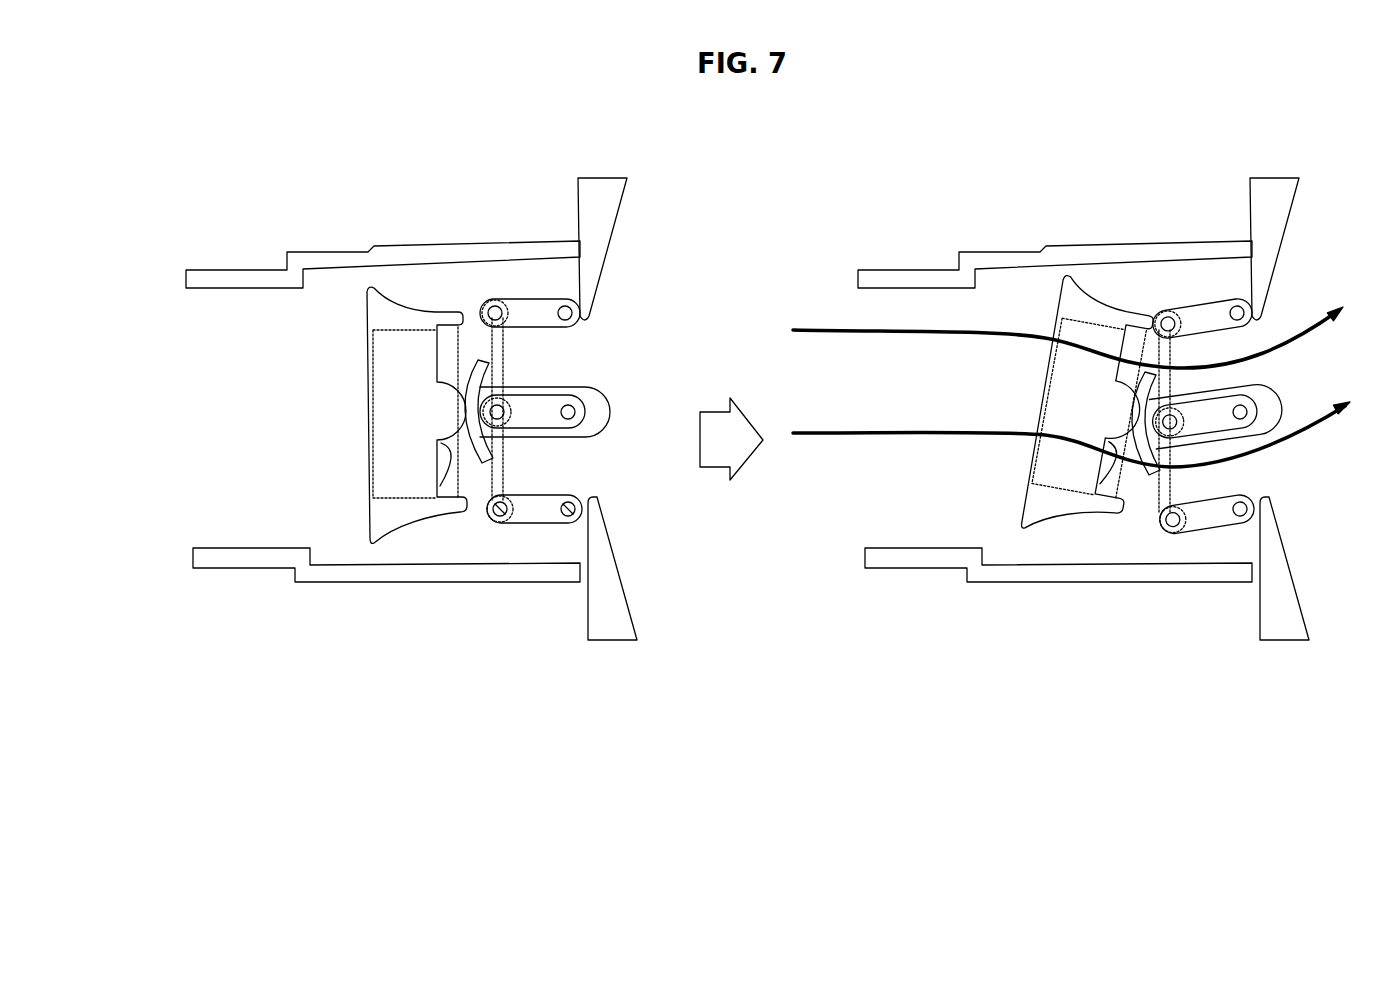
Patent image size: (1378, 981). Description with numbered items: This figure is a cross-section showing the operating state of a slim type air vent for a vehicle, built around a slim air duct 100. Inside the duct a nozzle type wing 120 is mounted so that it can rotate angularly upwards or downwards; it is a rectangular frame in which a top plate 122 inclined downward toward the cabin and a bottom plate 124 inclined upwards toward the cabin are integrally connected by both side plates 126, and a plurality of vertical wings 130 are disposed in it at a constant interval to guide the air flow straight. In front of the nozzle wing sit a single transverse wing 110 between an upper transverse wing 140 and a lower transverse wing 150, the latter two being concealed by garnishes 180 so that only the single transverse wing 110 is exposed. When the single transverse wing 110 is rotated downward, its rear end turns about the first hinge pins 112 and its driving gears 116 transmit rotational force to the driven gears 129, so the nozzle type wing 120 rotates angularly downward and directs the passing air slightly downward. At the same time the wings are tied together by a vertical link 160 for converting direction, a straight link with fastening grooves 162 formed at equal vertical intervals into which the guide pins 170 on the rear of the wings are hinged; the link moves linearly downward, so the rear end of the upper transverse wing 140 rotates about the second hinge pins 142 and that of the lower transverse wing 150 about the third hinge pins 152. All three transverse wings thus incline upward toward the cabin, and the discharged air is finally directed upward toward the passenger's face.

The slim air duct 100 is at (354, 245).
The single transverse wing 110 is at (591, 437).
The first hinge pins 112 is at (568, 415).
The driving gears 116 is at (467, 513).
The nozzle type wing 120 is at (363, 333).
The top plate 122 is at (407, 303).
The bottom plate 124 is at (394, 533).
The side plates 126 is at (368, 385).
The driven gears 129 is at (438, 468).
The vertical wings 130 is at (372, 425).
The upper transverse wing 140 is at (516, 227).
The second hinge pins 142 is at (572, 306).
The lower transverse wing 150 is at (512, 597).
The third hinge pins 152 is at (537, 516).
The vertical link for converting direction 160 is at (506, 354).
The fastening grooves 162 is at (503, 523).
The guide pins 170 is at (497, 305).
The garnishes 180 is at (613, 230).